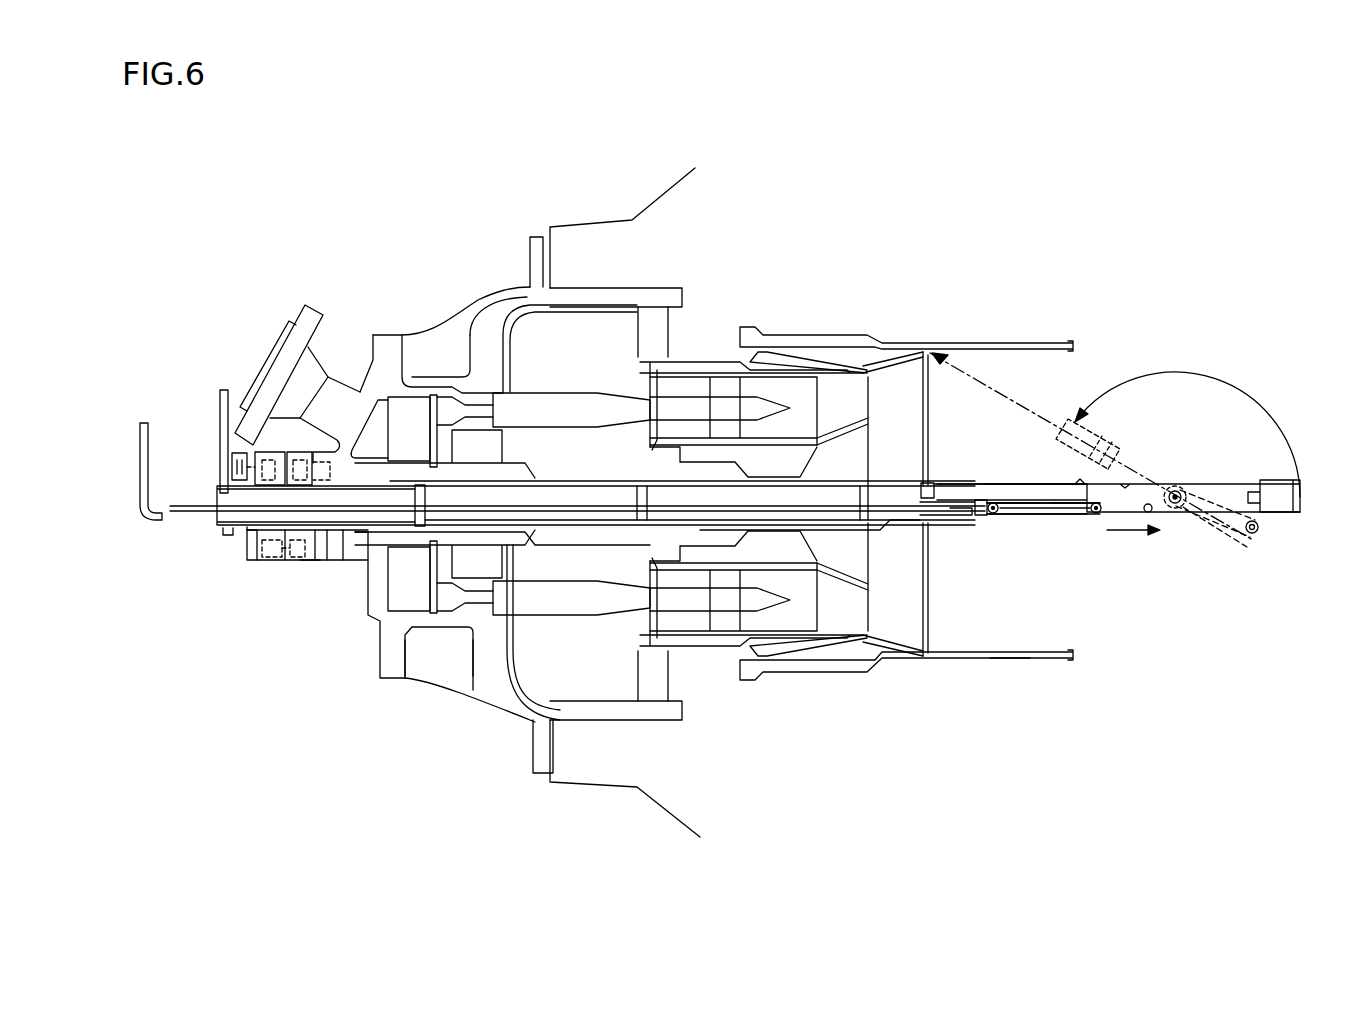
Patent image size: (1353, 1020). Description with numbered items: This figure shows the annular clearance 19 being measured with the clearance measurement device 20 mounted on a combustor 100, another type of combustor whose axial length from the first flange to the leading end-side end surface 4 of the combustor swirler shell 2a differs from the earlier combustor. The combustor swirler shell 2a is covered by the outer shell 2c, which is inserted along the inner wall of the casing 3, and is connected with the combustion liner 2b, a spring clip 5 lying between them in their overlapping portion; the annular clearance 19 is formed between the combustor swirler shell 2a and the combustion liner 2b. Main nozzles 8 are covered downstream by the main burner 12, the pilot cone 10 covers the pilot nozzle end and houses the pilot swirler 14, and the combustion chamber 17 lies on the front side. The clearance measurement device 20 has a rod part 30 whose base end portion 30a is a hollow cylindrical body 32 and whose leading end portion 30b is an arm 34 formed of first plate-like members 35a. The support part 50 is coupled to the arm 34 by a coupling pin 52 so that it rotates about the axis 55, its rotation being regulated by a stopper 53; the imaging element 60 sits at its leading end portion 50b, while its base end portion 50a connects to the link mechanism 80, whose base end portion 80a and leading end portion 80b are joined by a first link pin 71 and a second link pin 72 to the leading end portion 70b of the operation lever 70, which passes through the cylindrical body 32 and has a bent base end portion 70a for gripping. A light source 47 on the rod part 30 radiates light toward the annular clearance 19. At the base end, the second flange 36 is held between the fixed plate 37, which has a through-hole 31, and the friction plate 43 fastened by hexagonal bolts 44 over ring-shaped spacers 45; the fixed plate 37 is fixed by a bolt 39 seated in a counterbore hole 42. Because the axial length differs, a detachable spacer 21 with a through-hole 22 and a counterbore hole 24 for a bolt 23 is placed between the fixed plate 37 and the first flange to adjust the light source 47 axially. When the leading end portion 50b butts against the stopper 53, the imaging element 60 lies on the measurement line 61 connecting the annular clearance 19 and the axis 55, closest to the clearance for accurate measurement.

The combustor 100 is at (402, 268).
The casing 3 is at (580, 222).
The combustor swirler shell 2a is at (700, 360).
The combustion liner 2b is at (868, 331).
The outer shell 2c is at (650, 287).
The spring clip 5 is at (817, 348).
The main nozzle 8 is at (593, 432).
The pilot cone 10 is at (870, 560).
The main burner 12 is at (875, 380).
The leading end-side end surface 4 is at (930, 415).
The pilot swirler 14 is at (775, 532).
The combustion chamber 17 is at (995, 641).
The annular clearance 19 is at (955, 358).
The clearance measurement device 20 is at (986, 470).
The spacer 21 is at (307, 563).
The through-hole 22 is at (321, 535).
The bolt 23 is at (312, 447).
The counterbore hole 24 is at (290, 447).
The rod part 30 is at (610, 474).
The base end portion 30a is at (362, 533).
The leading end portion 30b is at (1080, 478).
The through-hole 31 is at (247, 543).
The cylindrical body 32 is at (465, 527).
The arm 34 is at (990, 482).
The first plate-like member 35a is at (1003, 510).
The second flange 36 is at (246, 560).
The fixed plate 37 is at (267, 562).
The bolt 39 is at (294, 562).
The counterbore hole 42 is at (253, 560).
The friction plate 43 is at (232, 450).
The hexagonal bolt 44 is at (234, 470).
The spacer 45 is at (223, 478).
The light source 47 is at (930, 483).
The support part 50 is at (1213, 466).
The base end portion 50a is at (1120, 513).
The leading end portion 50b is at (1243, 483).
The coupling pin 52 is at (1177, 517).
The stopper 53 is at (1133, 468).
The axis 55 is at (1177, 490).
The imaging element 60 is at (1258, 530).
The measurement line 61 is at (1035, 400).
The operation lever 70 is at (610, 508).
The base end portion 70a is at (153, 423).
The leading end portion 70b is at (950, 505).
The first link pin 71 is at (991, 515).
The second link pin 72 is at (1100, 515).
The link mechanism 80 is at (1046, 570).
The base end portion 80a is at (1003, 515).
The leading end portion 80b is at (1073, 515).